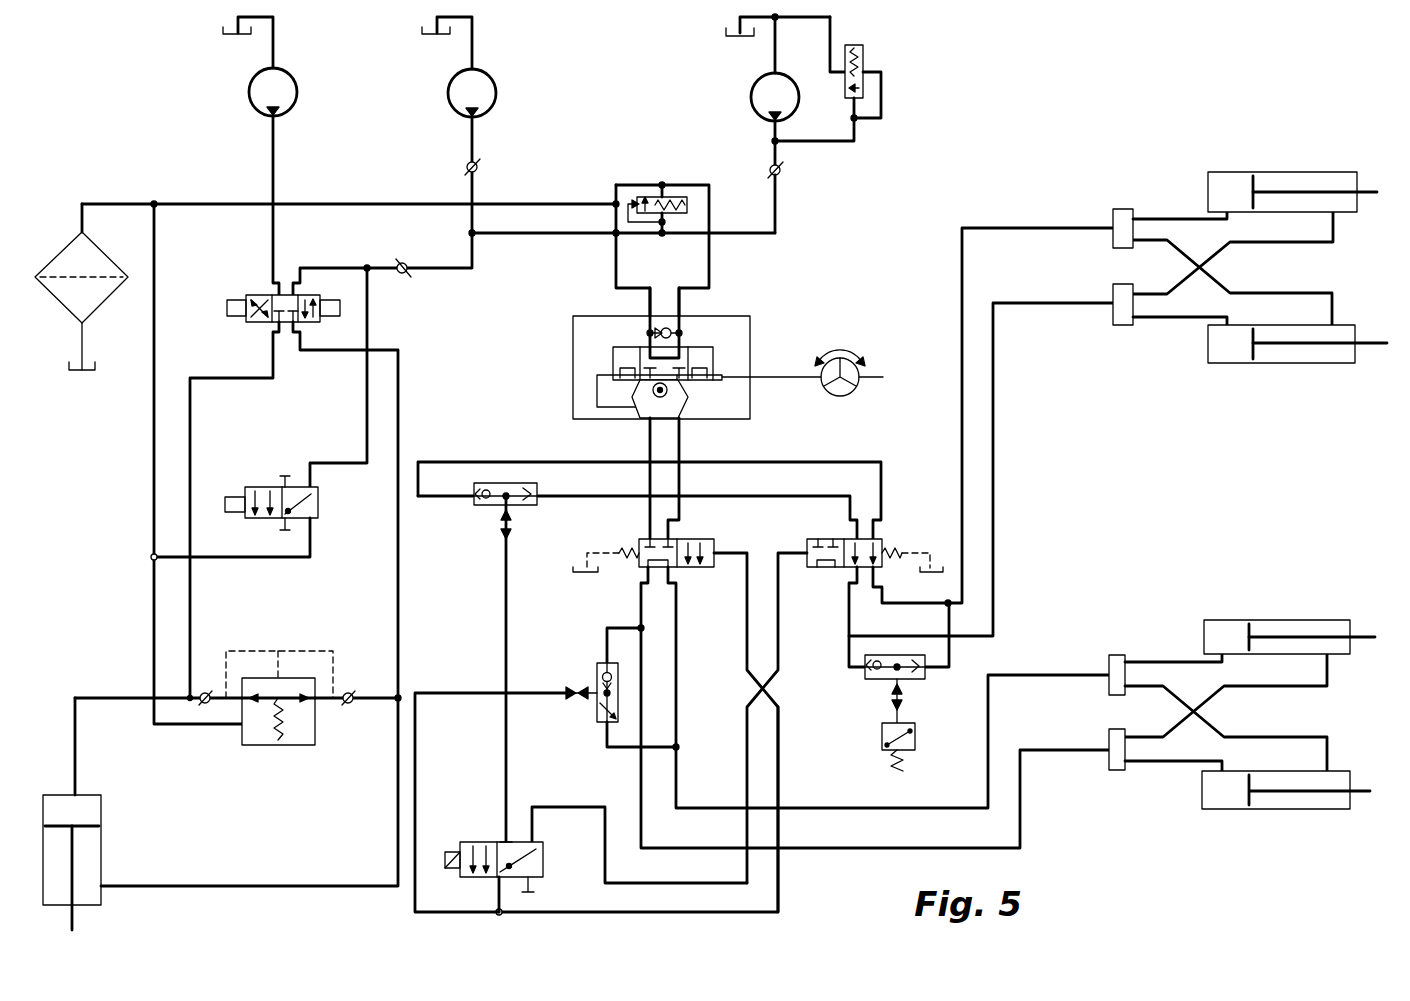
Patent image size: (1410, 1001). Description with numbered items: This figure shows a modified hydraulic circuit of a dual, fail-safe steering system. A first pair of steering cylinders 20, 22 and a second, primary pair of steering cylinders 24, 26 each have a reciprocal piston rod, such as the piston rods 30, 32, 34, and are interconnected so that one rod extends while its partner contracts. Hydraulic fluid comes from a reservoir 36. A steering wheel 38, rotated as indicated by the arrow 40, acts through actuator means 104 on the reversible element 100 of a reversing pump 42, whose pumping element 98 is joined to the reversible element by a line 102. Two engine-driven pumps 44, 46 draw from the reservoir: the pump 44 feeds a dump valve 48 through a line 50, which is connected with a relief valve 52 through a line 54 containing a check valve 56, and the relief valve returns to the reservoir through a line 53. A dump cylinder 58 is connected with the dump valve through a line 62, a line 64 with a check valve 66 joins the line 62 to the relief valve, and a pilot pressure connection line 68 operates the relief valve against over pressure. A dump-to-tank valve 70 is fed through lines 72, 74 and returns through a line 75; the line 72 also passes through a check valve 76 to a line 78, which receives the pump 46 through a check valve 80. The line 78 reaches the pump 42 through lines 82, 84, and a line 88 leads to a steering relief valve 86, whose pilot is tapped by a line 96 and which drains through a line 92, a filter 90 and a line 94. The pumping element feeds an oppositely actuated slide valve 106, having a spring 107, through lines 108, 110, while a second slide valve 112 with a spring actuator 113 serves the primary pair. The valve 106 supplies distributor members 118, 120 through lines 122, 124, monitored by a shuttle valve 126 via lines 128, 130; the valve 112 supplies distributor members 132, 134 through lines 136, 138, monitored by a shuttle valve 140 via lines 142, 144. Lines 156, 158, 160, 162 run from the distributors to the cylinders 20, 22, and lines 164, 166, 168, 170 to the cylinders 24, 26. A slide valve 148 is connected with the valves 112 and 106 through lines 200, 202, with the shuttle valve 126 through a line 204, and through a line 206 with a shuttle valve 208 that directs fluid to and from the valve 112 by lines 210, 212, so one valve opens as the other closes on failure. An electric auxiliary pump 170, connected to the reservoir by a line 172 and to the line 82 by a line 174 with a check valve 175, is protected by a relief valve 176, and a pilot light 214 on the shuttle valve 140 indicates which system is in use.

The steering cylinder 20 is at (1295, 810).
The steering cylinder 22 is at (1305, 620).
The steering cylinder 24 is at (1290, 363).
The steering cylinder 26 is at (1330, 184).
The piston rod 30 is at (1358, 637).
The piston rod 32 is at (1378, 345).
The piston rod 34 is at (1370, 194).
The reservoir 36 is at (236, 38).
The steering wheel 38 is at (864, 377).
The arrow 40 is at (842, 348).
The pump 42 is at (737, 352).
The pump 44 is at (299, 97).
The pump 46 is at (497, 99).
The dump valve 48 is at (250, 324).
The line 50 is at (275, 153).
The relief valve 52 is at (300, 740).
The line 53 is at (152, 485).
The line 54 is at (192, 615).
The check valve 56 is at (205, 702).
The dump cylinder 58 is at (102, 820).
The line 62 is at (396, 540).
The line 64 is at (368, 698).
The check valve 66 is at (349, 706).
The internal pilot pressure connection line 68 is at (316, 651).
The dump-to-tank valve 70 is at (315, 498).
The line 72 is at (330, 268).
The line 74 is at (369, 318).
The line 75 is at (290, 558).
The check valve 76 is at (400, 262).
The line 78 is at (473, 258).
The check valve 80 is at (478, 160).
The line 82 is at (576, 236).
The line 84 is at (618, 262).
The steering relief valve 86 is at (678, 196).
The line 88 is at (668, 230).
The filter 90 is at (60, 252).
The line 92 is at (213, 204).
The line 94 is at (96, 338).
The line 96 is at (626, 212).
The pumping element 98 is at (656, 395).
The reversible element 100 is at (625, 352).
The line 102 is at (596, 392).
The actuator means 104 is at (785, 377).
The slide valve 106 is at (700, 540).
The spring 107 is at (630, 562).
The line 108 is at (648, 518).
The line 110 is at (681, 437).
The slide valve 112 is at (825, 568).
The spring actuator 113 is at (896, 546).
The distributor member 118 is at (1110, 770).
The distributor member 120 is at (1110, 662).
The line 122 is at (640, 792).
The line 124 is at (678, 660).
The shuttle valve 126 is at (596, 676).
The line 128 is at (607, 628).
The line 130 is at (623, 748).
The distributor member 132 is at (1113, 313).
The distributor member 134 is at (1122, 208).
The line 136 is at (995, 531).
The line 138 is at (1010, 228).
The shuttle valve 140 is at (916, 683).
The line 142 is at (848, 654).
The line 144 is at (951, 654).
The slide valve 148 is at (534, 858).
The line 156 is at (1155, 762).
The line 158 is at (1290, 688).
The line 160 is at (1170, 662).
The line 162 is at (1292, 737).
The line 164 is at (1180, 319).
The line 166 is at (1320, 242).
The line 168 is at (1162, 219).
The auxiliary pump 170 is at (752, 107).
The line 172 is at (777, 63).
The line 174 is at (778, 212).
The check valve 175 is at (782, 165).
The relief valve 176 is at (868, 52).
The line 200 is at (707, 912).
The line 202 is at (707, 883).
The line 204 is at (458, 693).
The line 206 is at (504, 548).
The shuttle valve 208 is at (518, 505).
The line 210 is at (615, 496).
The line 212 is at (478, 462).
The pilot light 214 is at (917, 743).